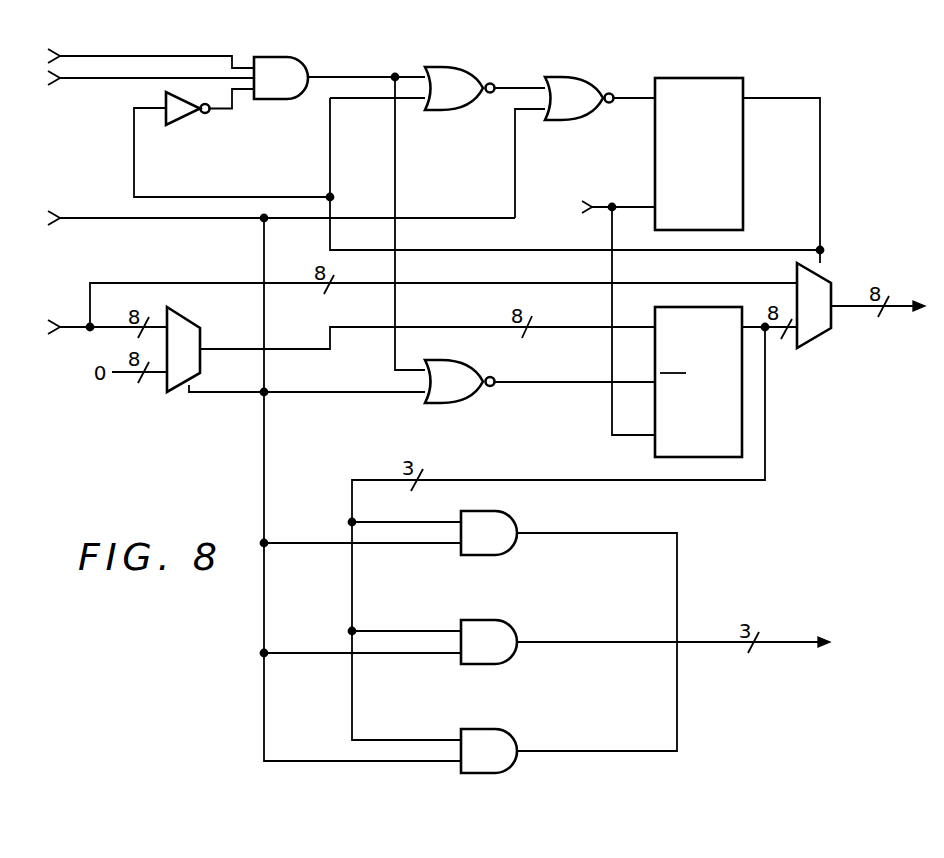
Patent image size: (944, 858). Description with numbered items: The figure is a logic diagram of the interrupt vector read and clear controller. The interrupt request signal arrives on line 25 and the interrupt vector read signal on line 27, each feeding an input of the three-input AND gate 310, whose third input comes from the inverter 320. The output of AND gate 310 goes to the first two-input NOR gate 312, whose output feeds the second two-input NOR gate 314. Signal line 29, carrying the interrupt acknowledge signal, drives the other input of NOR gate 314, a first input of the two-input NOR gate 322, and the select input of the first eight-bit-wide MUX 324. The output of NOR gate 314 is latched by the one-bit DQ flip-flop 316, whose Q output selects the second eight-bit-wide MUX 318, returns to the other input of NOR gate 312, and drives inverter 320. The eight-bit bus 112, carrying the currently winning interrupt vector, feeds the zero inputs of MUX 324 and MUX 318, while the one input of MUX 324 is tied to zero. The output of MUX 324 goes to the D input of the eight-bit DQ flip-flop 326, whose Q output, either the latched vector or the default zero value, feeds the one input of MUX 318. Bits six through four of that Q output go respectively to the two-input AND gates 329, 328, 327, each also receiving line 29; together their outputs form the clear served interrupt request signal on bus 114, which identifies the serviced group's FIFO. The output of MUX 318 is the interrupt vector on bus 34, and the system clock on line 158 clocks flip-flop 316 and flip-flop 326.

The line 25 is at (90, 53).
The line 27 is at (90, 81).
The signal line 29 is at (90, 214).
The eight bit wide bus 112 is at (65, 321).
The line 158 is at (598, 204).
The 3-input AND gate 310 is at (277, 100).
The first 2-input NOR gate 312 is at (434, 112).
The second 2-input NOR gate 314 is at (559, 121).
The 1-bit DQ flip-flop 316 is at (698, 77).
The second 2-input MUX 318 is at (813, 348).
The inverter 320 is at (181, 126).
The 2-input NOR gate 322 is at (453, 405).
The first 2-input MUX 324 is at (187, 318).
The eight bit DQ flip-flop 326 is at (743, 413).
The 2-input AND gate 327 is at (482, 774).
The 2-input AND gate 328 is at (482, 665).
The 2-input AND gate 329 is at (482, 556).
The bus 34 is at (852, 304).
The bus 114 is at (785, 640).